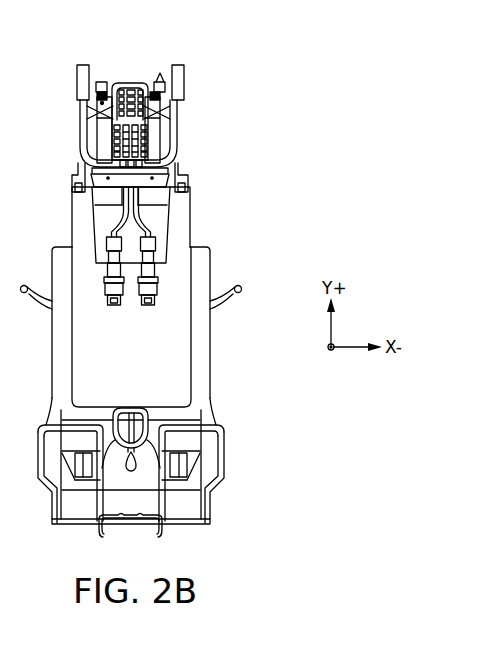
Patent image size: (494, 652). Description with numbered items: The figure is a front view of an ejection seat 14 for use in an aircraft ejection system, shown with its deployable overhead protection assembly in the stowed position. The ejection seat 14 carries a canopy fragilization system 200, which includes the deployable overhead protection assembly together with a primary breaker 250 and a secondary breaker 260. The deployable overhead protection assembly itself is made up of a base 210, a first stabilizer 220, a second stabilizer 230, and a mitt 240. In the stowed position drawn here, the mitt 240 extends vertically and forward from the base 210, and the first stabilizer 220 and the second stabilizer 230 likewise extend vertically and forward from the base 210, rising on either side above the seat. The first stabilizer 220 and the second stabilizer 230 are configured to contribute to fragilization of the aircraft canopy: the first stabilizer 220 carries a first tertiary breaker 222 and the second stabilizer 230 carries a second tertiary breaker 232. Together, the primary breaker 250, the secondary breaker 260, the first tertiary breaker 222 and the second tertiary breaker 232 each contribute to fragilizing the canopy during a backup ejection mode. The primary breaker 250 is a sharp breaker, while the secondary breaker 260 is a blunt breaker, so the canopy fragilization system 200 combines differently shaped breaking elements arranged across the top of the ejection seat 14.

The ejection seat 14 is at (274, 206).
The canopy fragilization system 200 is at (221, 102).
The base 210 is at (140, 173).
The first stabilizer 220 is at (168, 137).
The first tertiary breaker 222 is at (185, 70).
The second stabilizer 230 is at (85, 133).
The second tertiary breaker 232 is at (82, 65).
The mitt 240 is at (105, 96).
The primary breaker 250 is at (170, 84).
The secondary breaker 260 is at (98, 82).